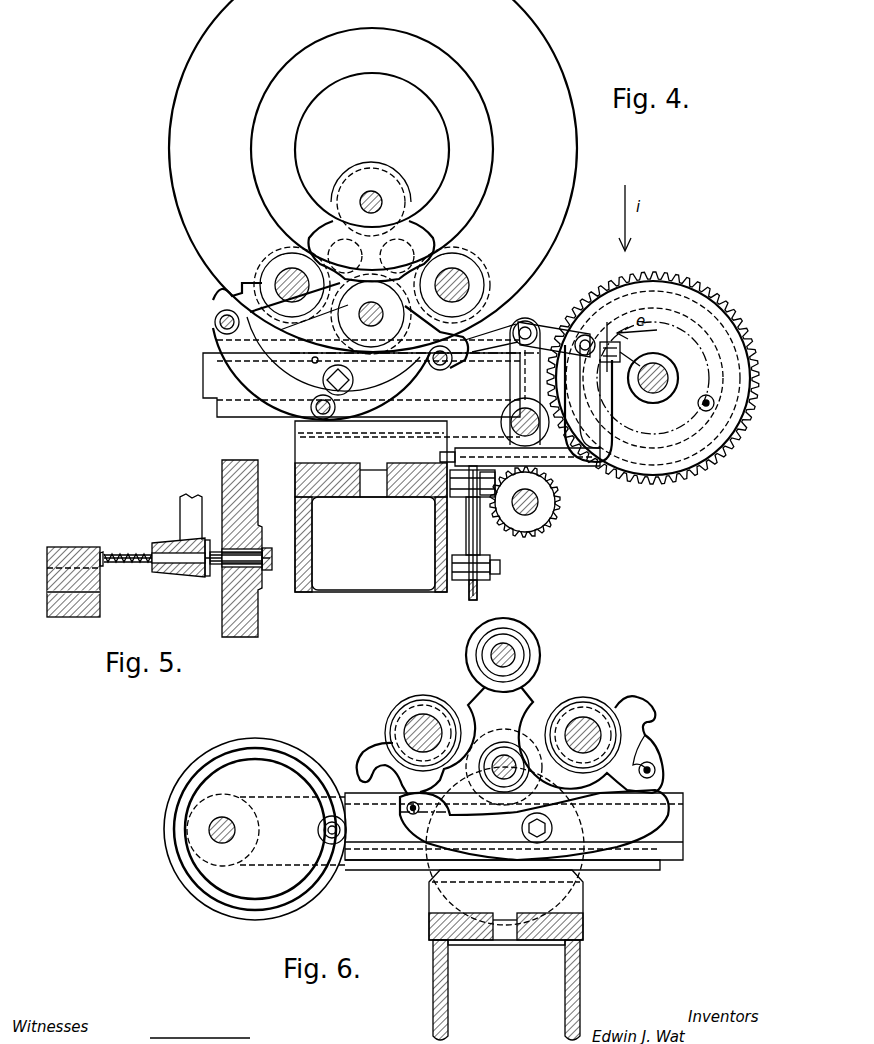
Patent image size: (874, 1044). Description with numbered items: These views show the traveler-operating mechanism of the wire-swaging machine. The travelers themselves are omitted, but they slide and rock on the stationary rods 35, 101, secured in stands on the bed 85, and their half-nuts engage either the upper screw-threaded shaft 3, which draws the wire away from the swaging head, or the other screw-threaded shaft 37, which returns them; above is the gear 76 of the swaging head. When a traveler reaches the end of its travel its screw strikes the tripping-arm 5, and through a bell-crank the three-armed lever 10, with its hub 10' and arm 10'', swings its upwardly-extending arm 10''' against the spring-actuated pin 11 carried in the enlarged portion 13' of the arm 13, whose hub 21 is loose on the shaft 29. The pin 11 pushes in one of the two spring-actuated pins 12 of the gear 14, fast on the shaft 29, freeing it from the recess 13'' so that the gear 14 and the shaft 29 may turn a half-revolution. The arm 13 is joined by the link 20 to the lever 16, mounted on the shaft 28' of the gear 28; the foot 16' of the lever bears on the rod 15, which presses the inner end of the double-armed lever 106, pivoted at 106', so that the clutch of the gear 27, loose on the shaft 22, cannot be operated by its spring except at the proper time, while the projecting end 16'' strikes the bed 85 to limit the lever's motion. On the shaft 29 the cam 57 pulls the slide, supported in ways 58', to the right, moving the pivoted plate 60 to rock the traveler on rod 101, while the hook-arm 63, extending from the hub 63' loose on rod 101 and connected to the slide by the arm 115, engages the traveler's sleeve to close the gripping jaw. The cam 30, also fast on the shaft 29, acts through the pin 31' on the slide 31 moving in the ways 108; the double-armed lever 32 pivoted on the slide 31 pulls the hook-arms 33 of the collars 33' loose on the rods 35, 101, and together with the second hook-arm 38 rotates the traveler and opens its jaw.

In FIG. 4, the screw-threaded shaft 3 is at (380, 197).
In FIG. 6, the screw-threaded shaft 3 is at (512, 650).
In FIG. 4, the gear 76 is at (487, 137).
In FIG. 4, the stationary rod 35 is at (288, 283).
In FIG. 6, the stationary rod 35 is at (601, 735).
In FIG. 4, the stationary rod 101 is at (464, 280).
In FIG. 6, the stationary rod 101 is at (402, 722).
In FIG. 4, the hub 63' is at (381, 252).
In FIG. 4, the screw-threaded shaft 37 is at (376, 311).
In FIG. 6, the screw-threaded shaft 37 is at (506, 755).
In FIG. 4, the hook-arm 63 is at (351, 351).
In FIG. 4, the arm 115 is at (248, 368).
In FIG. 4, the ways 58' is at (333, 376).
In FIG. 4, the pivoted plate 60 is at (354, 380).
In FIG. 4, the spring-actuated pin 12 is at (325, 374).
In FIG. 5, the spring-actuated pin 12 is at (207, 578).
In FIG. 4, the cam 57 is at (710, 332).
In FIG. 4, the shaft 29 is at (680, 372).
In FIG. 6, the shaft 29 is at (236, 826).
In FIG. 4, the gear 14 is at (730, 442).
In FIG. 5, the gear 14 is at (253, 493).
In FIG. 4, the hub 21 is at (625, 345).
In FIG. 4, the arm 13 is at (639, 343).
In FIG. 5, the arm 13 is at (177, 516).
In FIG. 4, the tripping-arm 5 is at (617, 354).
In FIG. 4, the link 20 is at (544, 321).
In FIG. 4, the lever 16 is at (514, 381).
In FIG. 4, the gear 28 is at (531, 432).
In FIG. 4, the shaft 28' is at (631, 486).
In FIG. 4, the foot 16' is at (503, 422).
In FIG. 4, the upwardly-extending arm 10''' is at (607, 403).
In FIG. 5, the upwardly-extending arm 10''' is at (59, 593).
In FIG. 4, the projecting end 16'' is at (496, 454).
In FIG. 4, the bed 85 is at (332, 497).
In FIG. 6, the bed 85 is at (585, 920).
In FIG. 4, the hub 10' is at (463, 533).
In FIG. 4, the arm 10'' is at (477, 503).
In FIG. 4, the rod 15 is at (480, 540).
In FIG. 4, the double-armed lever 106 is at (489, 577).
In FIG. 4, the pivot 106' is at (515, 564).
In FIG. 4, the shaft 22 is at (540, 502).
In FIG. 4, the gear 27 is at (548, 530).
In FIG. 4, the three-armed lever 10 is at (566, 491).
In FIG. 5, the spring-actuated pin 11 is at (132, 566).
In FIG. 5, the recess 13'' is at (171, 576).
In FIG. 5, the enlarged portion 13' is at (217, 534).
In FIG. 6, the hook-arm 38 is at (361, 755).
In FIG. 6, the collar 33' is at (505, 688).
In FIG. 6, the hook-arm 33 is at (537, 807).
In FIG. 6, the slide 31 is at (461, 846).
In FIG. 6, the double-armed lever 32 is at (534, 825).
In FIG. 6, the pin 31' is at (314, 834).
In FIG. 6, the ways 108 is at (380, 867).
In FIG. 6, the cam 30 is at (200, 900).